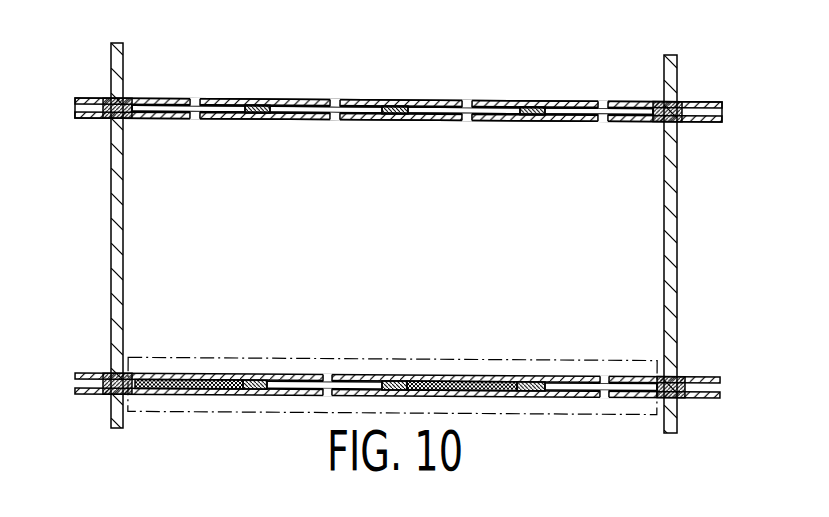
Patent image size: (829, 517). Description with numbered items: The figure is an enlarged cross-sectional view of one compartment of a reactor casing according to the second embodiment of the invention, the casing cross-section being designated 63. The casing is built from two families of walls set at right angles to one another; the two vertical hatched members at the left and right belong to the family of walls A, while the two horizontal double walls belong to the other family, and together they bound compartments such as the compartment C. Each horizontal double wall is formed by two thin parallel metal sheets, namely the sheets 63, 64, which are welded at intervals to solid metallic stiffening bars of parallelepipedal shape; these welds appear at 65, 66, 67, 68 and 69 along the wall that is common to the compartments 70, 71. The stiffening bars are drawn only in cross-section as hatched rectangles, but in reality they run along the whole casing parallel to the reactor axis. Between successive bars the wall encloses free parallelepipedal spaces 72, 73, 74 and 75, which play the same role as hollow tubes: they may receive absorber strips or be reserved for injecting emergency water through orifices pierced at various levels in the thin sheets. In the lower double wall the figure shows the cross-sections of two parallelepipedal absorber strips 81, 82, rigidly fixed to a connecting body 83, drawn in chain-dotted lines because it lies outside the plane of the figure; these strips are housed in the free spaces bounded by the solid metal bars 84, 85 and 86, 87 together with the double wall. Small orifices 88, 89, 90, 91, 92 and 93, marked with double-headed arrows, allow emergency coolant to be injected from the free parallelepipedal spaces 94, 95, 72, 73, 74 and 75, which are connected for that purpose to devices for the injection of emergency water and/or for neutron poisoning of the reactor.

The thin metal sheet 63 is at (181, 99).
The thin metal sheet 64 is at (171, 121).
The stiffening bar weld 65 is at (112, 119).
The stiffening bar weld 66 is at (262, 105).
The stiffening bar weld 67 is at (395, 105).
The stiffening bar weld 68 is at (530, 105).
The stiffening bar weld 69 is at (657, 100).
The compartment 70 is at (549, 68).
The compartment 71 is at (547, 181).
The free parallelepipedal space 72 is at (213, 111).
The free parallelepipedal space 73 is at (313, 113).
The free parallelepipedal space 74 is at (446, 111).
The free parallelepipedal space 75 is at (553, 113).
The parallelepipedal absorber strip 81 is at (228, 397).
The parallelepipedal absorber strip 82 is at (460, 381).
The connecting body 83 is at (165, 357).
The solid metal bar 84 is at (110, 395).
The solid metal bar 85 is at (253, 391).
The solid metal bar 86 is at (393, 381).
The solid metal bar 87 is at (530, 380).
The emergency coolant injection orifice 88 is at (327, 420).
The emergency coolant injection orifice 89 is at (604, 422).
The emergency coolant injection orifice 90 is at (195, 148).
The emergency coolant injection orifice 91 is at (335, 150).
The emergency coolant injection orifice 92 is at (467, 150).
The emergency coolant injection orifice 93 is at (603, 152).
The free parallelepipedal space 94 is at (282, 380).
The free parallelepipedal space 95 is at (572, 390).
The wall family A is at (110, 250).
The compartment C is at (208, 337).